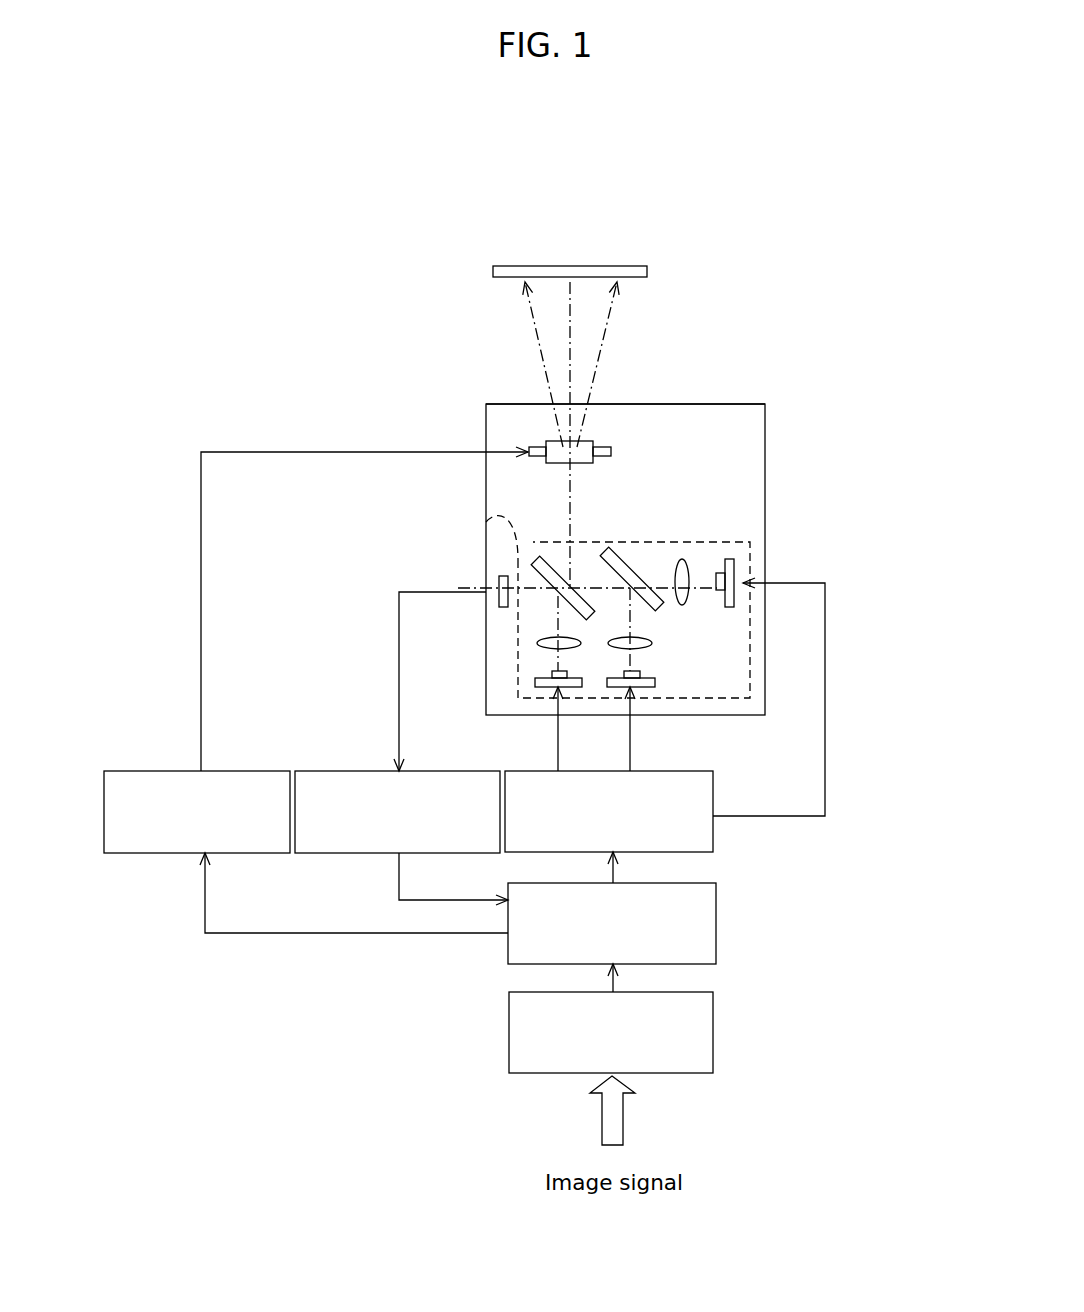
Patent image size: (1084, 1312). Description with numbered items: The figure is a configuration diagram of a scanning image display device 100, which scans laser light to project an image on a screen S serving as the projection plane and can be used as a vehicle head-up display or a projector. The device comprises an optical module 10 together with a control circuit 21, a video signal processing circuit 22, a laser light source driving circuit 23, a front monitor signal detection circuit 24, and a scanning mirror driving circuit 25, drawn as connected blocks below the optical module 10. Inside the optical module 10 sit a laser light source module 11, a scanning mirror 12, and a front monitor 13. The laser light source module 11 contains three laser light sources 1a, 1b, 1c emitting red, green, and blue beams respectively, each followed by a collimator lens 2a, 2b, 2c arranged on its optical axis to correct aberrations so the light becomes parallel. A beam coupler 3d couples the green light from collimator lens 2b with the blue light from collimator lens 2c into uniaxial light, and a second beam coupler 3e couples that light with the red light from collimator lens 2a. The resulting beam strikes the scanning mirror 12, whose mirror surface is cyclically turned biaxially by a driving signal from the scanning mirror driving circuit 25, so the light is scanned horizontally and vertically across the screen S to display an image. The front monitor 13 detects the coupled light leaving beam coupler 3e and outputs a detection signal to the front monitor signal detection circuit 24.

The screen S is at (495, 273).
The scanning image display device 100 is at (753, 255).
The optical module 10 is at (741, 404).
The scanning mirror 12 is at (534, 444).
The laser light source module 11 is at (486, 522).
The front monitor 13 is at (499, 578).
The beam coupler 3e is at (562, 603).
The beam coupler 3d is at (656, 608).
The collimator lens 2a is at (540, 647).
The collimator lens 2b is at (687, 562).
The collimator lens 2c is at (655, 647).
The laser light source 1a is at (540, 688).
The laser light source 1b is at (735, 565).
The laser light source 1c is at (644, 688).
The scanning mirror driving circuit 25 is at (200, 771).
The front monitor signal detection circuit 24 is at (352, 771).
The laser light source driving circuit 23 is at (713, 801).
The video signal processing circuit 22 is at (716, 905).
The control circuit 21 is at (713, 1003).